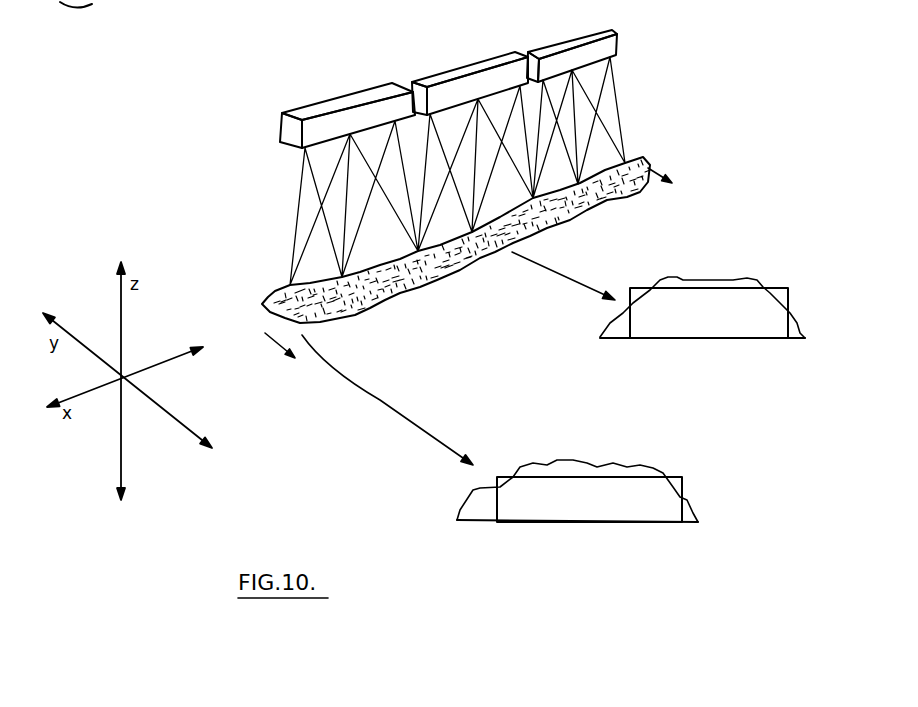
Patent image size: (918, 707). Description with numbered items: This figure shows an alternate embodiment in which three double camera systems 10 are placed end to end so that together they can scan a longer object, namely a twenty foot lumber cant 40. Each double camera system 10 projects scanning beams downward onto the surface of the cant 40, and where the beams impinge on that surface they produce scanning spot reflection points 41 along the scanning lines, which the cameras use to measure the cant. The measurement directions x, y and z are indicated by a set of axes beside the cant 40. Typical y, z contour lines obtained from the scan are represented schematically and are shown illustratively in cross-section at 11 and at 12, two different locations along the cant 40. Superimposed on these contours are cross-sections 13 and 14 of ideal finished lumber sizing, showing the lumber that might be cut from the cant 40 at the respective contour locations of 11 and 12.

The double camera system 10 is at (282, 125).
The cross-sectional contour 11 is at (724, 277).
The cross-sectional contour 12 is at (665, 442).
The superimposed cross-section of ideal finished lumber sizing 13 is at (790, 297).
The superimposed cross-section of ideal finished lumber sizing 14 is at (680, 484).
The lumber cant 40 is at (402, 288).
The scanning spot reflection points 41 is at (396, 264).